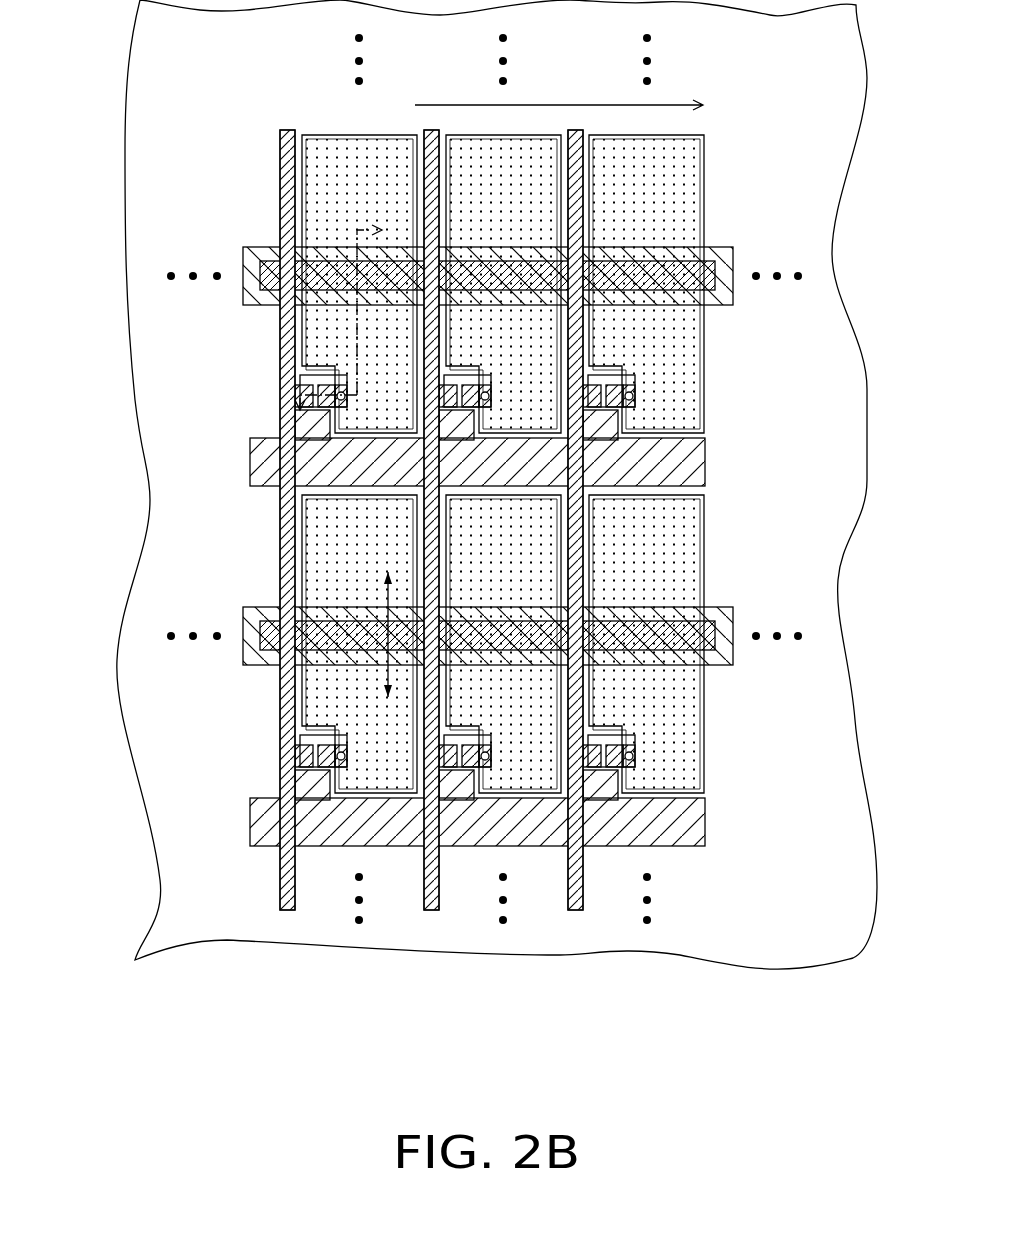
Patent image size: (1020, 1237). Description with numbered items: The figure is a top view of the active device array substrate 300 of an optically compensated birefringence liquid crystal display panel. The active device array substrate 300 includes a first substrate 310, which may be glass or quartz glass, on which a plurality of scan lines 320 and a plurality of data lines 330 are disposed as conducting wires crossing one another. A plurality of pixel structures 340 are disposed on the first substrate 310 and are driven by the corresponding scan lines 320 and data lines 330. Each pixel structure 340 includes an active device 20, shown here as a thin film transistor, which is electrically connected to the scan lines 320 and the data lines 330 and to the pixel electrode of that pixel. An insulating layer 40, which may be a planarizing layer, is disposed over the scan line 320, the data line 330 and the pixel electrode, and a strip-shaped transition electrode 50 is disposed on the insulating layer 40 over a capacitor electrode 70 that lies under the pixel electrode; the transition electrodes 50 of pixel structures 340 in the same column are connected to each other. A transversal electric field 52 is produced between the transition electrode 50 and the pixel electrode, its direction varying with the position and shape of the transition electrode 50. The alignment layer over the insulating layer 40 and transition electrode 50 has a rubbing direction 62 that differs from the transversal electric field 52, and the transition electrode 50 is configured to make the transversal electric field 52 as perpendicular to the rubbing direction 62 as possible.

The active device 20 is at (290, 750).
The insulating layer 40 is at (312, 680).
The transition electrode 50 is at (260, 630).
The transversal electric field 52 is at (380, 597).
The rubbing direction 62 is at (667, 100).
The capacitor electrode 70 is at (250, 614).
The active device array substrate 300 is at (853, 1021).
The first substrate 310 is at (173, 920).
The scan lines 320 is at (260, 820).
The data lines 330 is at (282, 866).
The pixel structures 340 is at (353, 553).